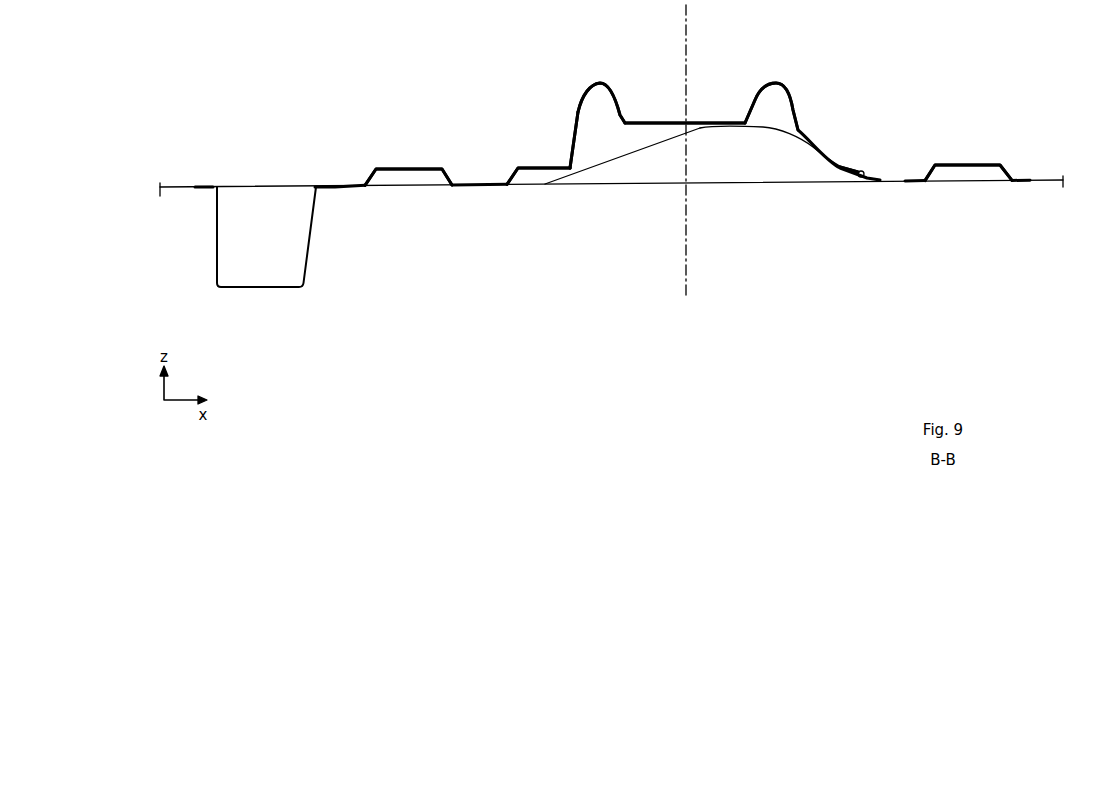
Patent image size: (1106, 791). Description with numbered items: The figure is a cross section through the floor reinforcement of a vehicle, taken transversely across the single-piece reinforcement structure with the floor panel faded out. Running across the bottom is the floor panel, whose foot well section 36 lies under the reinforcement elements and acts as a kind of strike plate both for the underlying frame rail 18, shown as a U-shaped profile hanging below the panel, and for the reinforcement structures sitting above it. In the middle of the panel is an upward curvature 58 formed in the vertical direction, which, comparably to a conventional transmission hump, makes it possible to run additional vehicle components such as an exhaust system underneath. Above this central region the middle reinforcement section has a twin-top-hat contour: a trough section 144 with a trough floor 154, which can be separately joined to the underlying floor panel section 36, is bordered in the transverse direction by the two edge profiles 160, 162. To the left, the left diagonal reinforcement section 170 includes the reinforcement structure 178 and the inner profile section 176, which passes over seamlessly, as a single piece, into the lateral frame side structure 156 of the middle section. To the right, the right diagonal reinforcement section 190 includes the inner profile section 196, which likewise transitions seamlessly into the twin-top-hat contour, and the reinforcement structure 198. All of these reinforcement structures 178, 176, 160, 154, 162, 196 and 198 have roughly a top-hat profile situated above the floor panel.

The frame rail 18 is at (262, 288).
The foot well section 36 is at (287, 185).
The upward curvature 58 is at (711, 201).
The trough section 144 is at (724, 82).
The trough floor 154 is at (648, 123).
The lateral frame side structure 156 is at (573, 137).
The edge profile 160 is at (593, 85).
The edge profile 162 is at (772, 92).
The left diagonal reinforcement section 170 is at (449, 108).
The inner profile section 176 is at (520, 170).
The reinforcement structure 178 is at (385, 168).
The right diagonal reinforcement section 190 is at (925, 90).
The inner profile section 196 is at (855, 165).
The reinforcement structure 198 is at (970, 165).